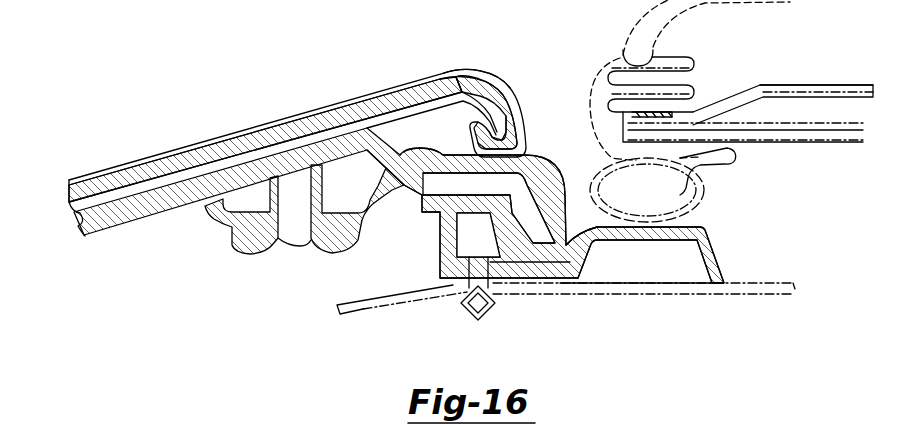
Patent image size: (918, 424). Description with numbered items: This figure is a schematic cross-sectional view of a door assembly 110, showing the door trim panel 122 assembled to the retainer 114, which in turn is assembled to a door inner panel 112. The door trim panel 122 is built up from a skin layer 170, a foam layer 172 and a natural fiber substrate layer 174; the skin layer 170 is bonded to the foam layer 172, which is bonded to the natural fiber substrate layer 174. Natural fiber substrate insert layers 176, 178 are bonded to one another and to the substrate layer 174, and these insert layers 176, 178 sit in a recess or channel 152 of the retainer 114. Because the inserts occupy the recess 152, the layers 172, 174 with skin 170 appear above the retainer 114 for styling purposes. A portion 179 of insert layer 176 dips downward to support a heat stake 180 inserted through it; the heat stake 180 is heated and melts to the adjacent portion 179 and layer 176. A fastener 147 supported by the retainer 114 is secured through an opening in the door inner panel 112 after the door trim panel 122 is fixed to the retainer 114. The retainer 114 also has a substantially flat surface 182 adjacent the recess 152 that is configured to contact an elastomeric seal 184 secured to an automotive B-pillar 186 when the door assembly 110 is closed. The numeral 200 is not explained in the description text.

The door assembly 110 is at (224, 103).
The door inner panel 112 is at (395, 306).
The retainer 114 is at (723, 265).
The door trim panel 122 is at (298, 115).
The fastener 147 is at (489, 311).
The recess or channel 152 is at (570, 240).
The skin layer 170 is at (456, 68).
The foam layer 172 is at (368, 108).
The natural fiber substrate layer 174 is at (488, 102).
The natural fiber substrate insert layer 176 is at (418, 182).
The natural fiber substrate insert layer 178 is at (558, 155).
The portion of substrate insert layer 179 is at (216, 224).
The heat stake 180 is at (246, 260).
The substantially flat surface 182 is at (693, 223).
The elastomeric seal 184 is at (727, 188).
The automotive B-pillar 186 is at (797, 86).
The component 200 is at (780, 423).